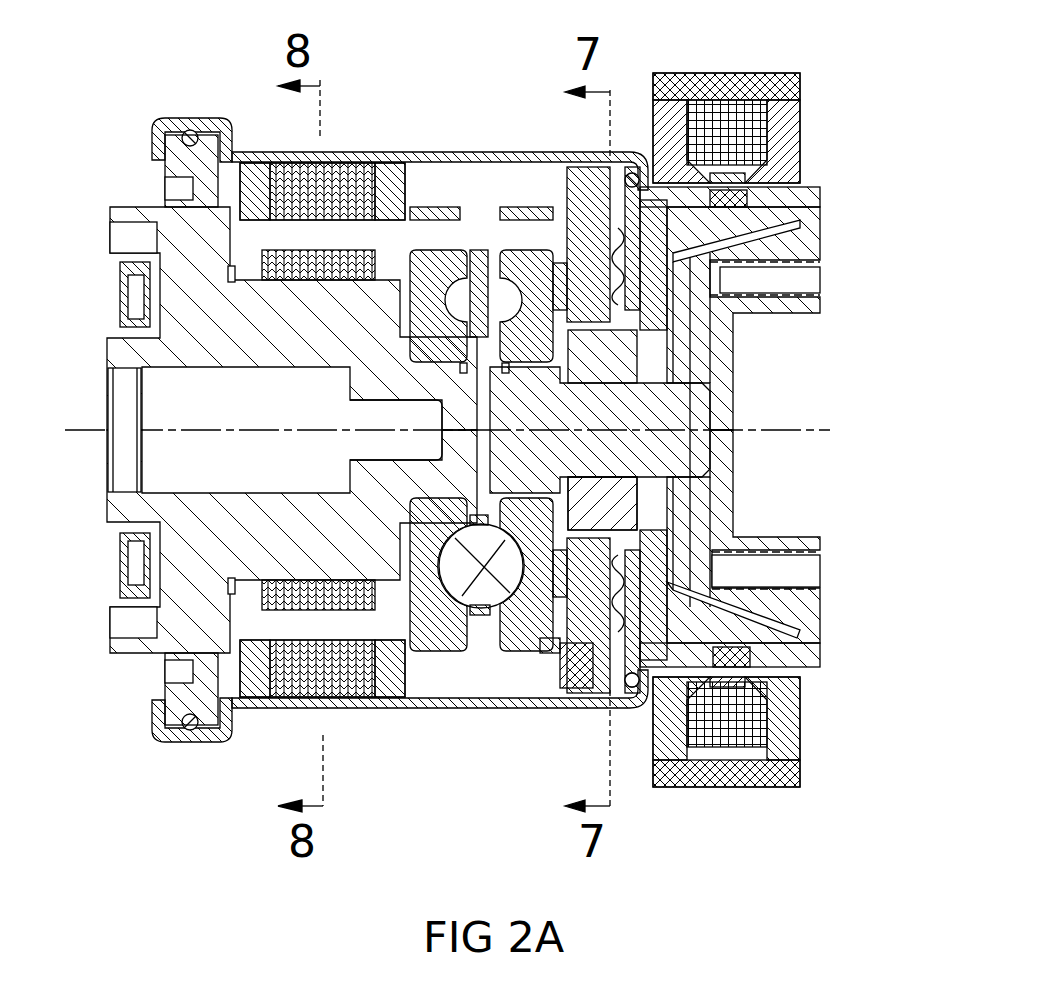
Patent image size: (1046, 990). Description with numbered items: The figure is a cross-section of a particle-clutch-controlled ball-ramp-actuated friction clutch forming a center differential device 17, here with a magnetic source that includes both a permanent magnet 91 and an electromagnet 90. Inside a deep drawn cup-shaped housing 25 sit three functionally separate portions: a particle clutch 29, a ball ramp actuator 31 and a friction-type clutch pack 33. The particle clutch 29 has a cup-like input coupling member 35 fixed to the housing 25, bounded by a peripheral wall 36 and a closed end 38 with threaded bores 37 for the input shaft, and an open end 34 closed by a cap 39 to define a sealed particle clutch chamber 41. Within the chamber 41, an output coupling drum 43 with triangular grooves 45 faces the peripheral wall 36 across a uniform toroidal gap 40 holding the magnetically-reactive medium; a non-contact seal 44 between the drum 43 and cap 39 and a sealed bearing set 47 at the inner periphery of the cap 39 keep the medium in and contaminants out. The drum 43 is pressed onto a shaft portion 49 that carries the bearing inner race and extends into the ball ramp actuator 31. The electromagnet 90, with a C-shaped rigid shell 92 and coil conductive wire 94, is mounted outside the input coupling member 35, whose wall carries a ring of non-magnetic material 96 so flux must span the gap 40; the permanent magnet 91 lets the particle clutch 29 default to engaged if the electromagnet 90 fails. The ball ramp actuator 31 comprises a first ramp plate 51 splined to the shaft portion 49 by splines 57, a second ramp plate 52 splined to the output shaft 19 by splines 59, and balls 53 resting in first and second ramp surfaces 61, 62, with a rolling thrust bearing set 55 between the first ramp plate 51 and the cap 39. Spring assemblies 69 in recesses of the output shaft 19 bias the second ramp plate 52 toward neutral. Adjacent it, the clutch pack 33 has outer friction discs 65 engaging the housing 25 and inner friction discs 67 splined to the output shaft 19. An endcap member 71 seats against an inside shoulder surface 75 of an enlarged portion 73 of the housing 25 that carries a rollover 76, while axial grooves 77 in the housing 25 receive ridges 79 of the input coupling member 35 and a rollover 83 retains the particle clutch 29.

The center differential device 17 is at (202, 40).
The output shaft 19 is at (107, 347).
The housing 25 is at (450, 150).
The particle clutch 29 is at (752, 322).
The ball ramp actuator 31 is at (436, 180).
The friction-type clutch pack 33 is at (222, 615).
The open end 34 is at (573, 688).
The input coupling member 35 is at (755, 535).
The peripheral wall 36 is at (792, 666).
The threaded bores 37 is at (790, 272).
The closed end 38 is at (742, 477).
The cap 39 is at (575, 683).
The gap 40 is at (790, 655).
The particle clutch chamber 41 is at (688, 343).
The output coupling drum 43 is at (700, 372).
The non-contact seal 44 is at (740, 618).
The grooves 45 is at (790, 220).
The sealed bearing set 47 is at (640, 500).
The shaft portion 49 is at (690, 440).
The first ramp plate 51 is at (525, 654).
The second ramp plate 52 is at (428, 654).
The balls 53 is at (472, 613).
The thrust bearing set 55 is at (592, 250).
The splines 57 is at (690, 386).
The splines 59 is at (428, 365).
The first ramp surfaces 61 is at (510, 258).
The second ramp surfaces 62 is at (463, 258).
The outer friction discs 65 is at (263, 694).
The inner friction discs 67 is at (263, 278).
The spring assemblies 69 is at (365, 580).
The endcap member 71 is at (165, 645).
The enlarged portion 73 is at (187, 750).
The inside shoulder surface 75 is at (190, 128).
The rollover 76 is at (150, 150).
The grooves 77 is at (490, 610).
The ridges 79 is at (600, 695).
The rollover 83 is at (634, 690).
The electromagnet 90 is at (815, 742).
The permanent magnet 91 is at (815, 88).
The rigid shell 92 is at (790, 720).
The coil conductive wire 94 is at (760, 772).
The ring of non-magnetic material 96 is at (740, 745).